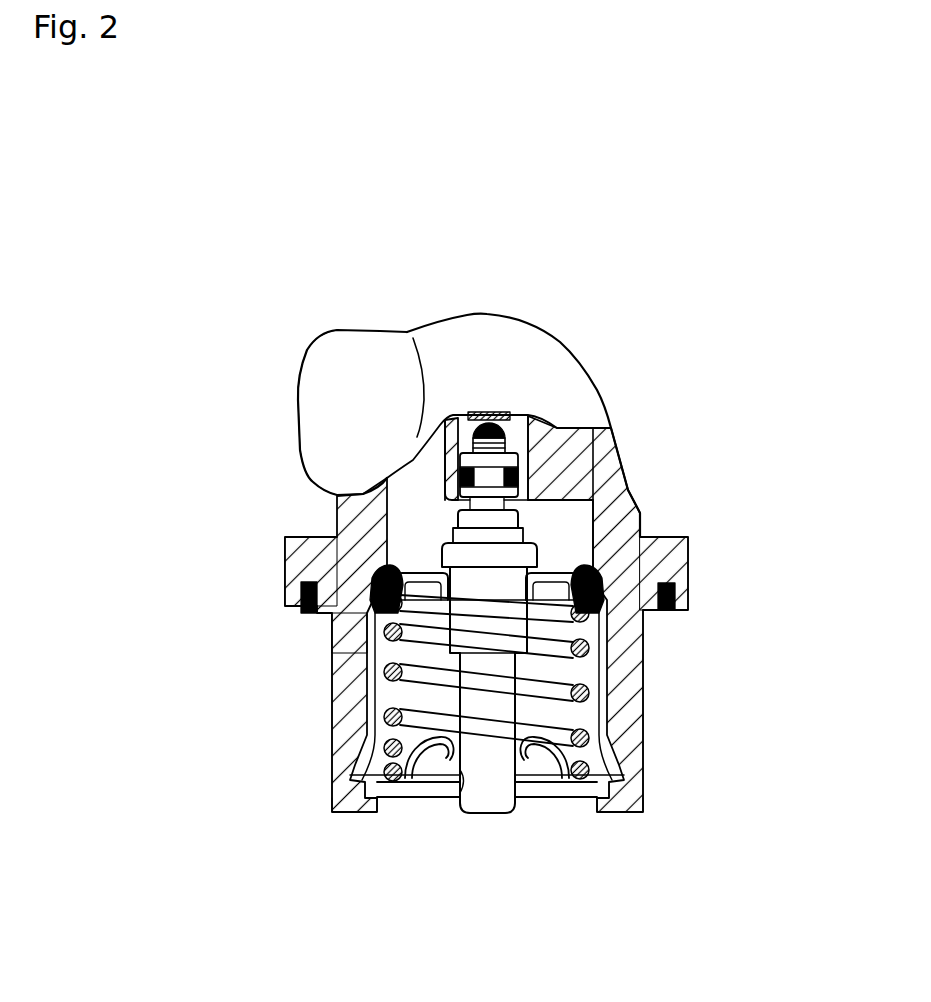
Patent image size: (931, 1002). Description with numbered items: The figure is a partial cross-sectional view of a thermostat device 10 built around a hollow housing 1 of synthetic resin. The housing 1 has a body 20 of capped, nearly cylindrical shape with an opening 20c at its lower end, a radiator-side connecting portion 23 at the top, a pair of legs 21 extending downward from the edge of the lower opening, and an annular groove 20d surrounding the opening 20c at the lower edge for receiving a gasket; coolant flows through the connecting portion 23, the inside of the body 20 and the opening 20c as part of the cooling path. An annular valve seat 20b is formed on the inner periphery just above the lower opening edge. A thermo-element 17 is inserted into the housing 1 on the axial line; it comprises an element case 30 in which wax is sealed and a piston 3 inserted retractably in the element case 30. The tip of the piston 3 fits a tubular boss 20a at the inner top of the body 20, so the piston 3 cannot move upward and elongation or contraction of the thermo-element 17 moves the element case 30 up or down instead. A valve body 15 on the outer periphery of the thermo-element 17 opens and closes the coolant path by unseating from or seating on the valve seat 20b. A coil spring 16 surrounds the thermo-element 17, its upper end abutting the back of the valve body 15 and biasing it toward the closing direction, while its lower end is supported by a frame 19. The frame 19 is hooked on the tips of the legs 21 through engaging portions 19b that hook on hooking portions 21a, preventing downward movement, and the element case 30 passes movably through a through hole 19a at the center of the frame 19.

The hollow housing 1 is at (686, 529).
The piston 3 is at (530, 478).
The thermostat device 10 is at (211, 293).
The valve body 15 is at (583, 568).
The coil spring 16 is at (395, 728).
The thermo-element 17 is at (487, 789).
The frame 19 is at (553, 799).
The through hole 19a is at (460, 813).
The engaging portions 19b is at (400, 750).
The body 20 is at (535, 333).
The tubular boss 20a is at (550, 427).
The valve seat 20b is at (595, 573).
The opening 20c is at (347, 640).
The annular groove 20d is at (287, 617).
The legs 21 is at (330, 676).
The hooking portions 21a is at (343, 808).
The radiator-side connecting portion 23 is at (363, 350).
The element case 30 is at (497, 705).